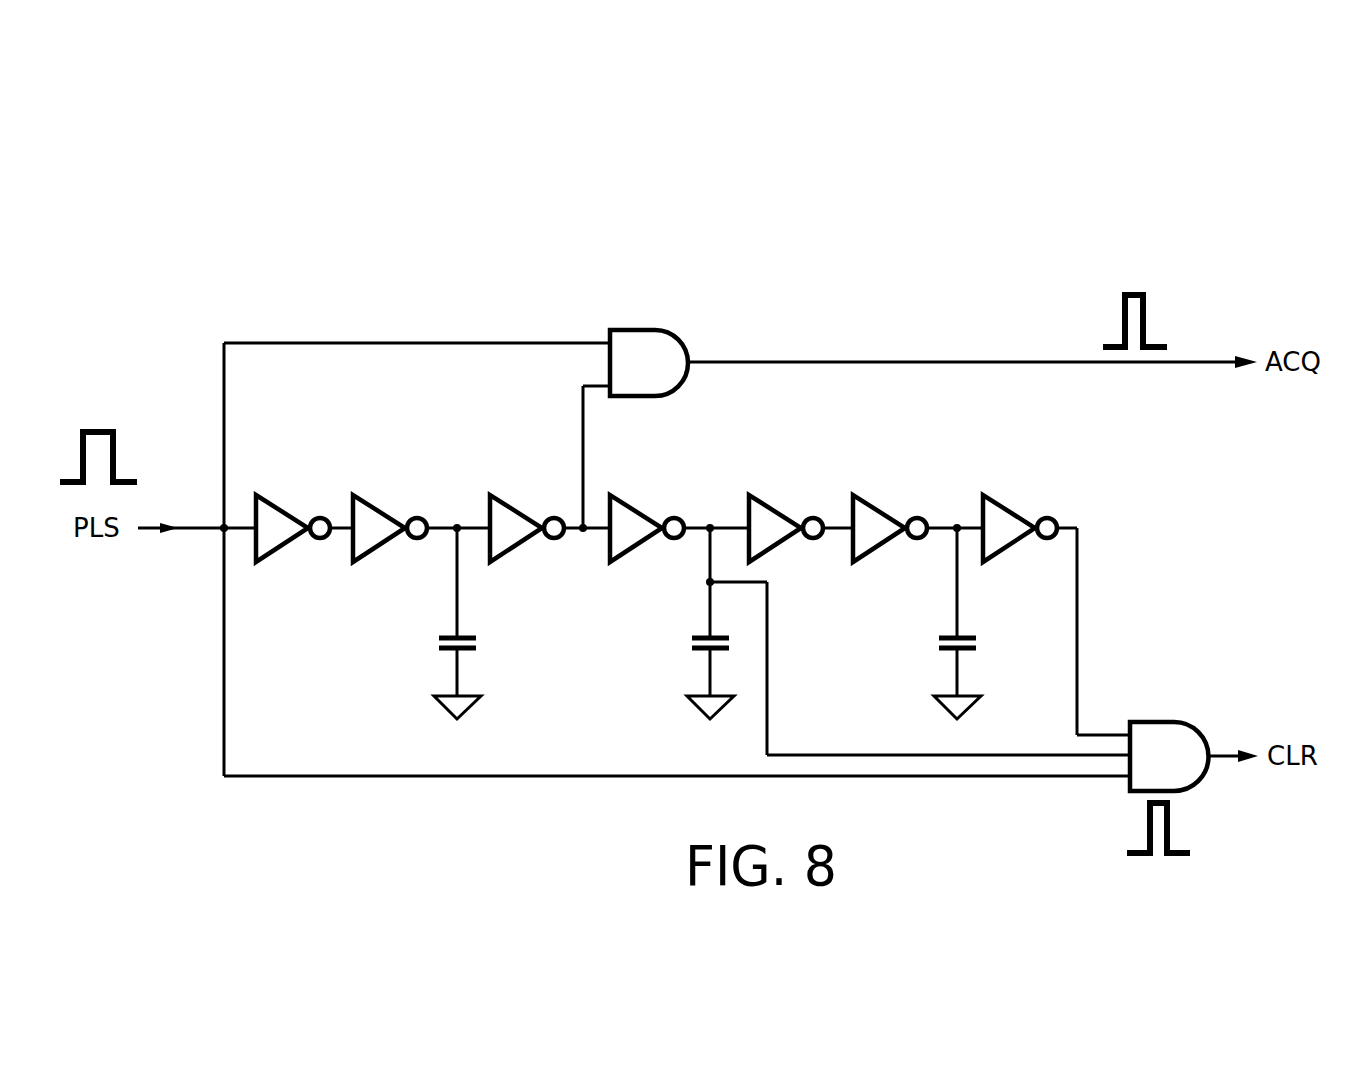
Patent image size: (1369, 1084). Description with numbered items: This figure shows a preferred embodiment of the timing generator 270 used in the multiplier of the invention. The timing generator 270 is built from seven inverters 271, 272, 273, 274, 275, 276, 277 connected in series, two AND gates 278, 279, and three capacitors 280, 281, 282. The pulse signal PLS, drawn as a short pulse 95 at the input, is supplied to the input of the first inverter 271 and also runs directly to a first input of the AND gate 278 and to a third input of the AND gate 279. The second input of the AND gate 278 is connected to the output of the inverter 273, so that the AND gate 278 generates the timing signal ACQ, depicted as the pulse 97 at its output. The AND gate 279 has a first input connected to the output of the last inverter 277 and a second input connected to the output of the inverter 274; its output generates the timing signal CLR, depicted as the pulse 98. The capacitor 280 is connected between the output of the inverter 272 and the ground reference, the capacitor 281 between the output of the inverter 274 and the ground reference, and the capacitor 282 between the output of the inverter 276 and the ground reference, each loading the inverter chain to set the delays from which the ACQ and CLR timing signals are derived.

The timing generator 270 is at (1302, 233).
The PLS input pulse 95 is at (120, 456).
The ACQ output pulse 97 is at (1150, 323).
The CLR output pulse 98 is at (1164, 860).
The inverter 271 is at (280, 500).
The inverter 272 is at (377, 500).
The inverter 273 is at (514, 500).
The inverter 274 is at (634, 500).
The inverter 275 is at (773, 500).
The inverter 276 is at (877, 500).
The inverter 277 is at (1007, 500).
The AND gate 278 is at (641, 320).
The AND gate 279 is at (1163, 718).
The capacitor 280 is at (437, 643).
The capacitor 281 is at (690, 643).
The capacitor 282 is at (937, 641).